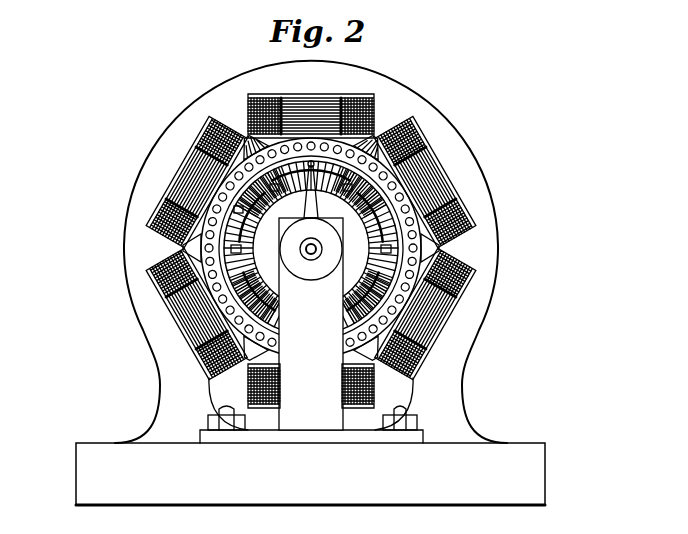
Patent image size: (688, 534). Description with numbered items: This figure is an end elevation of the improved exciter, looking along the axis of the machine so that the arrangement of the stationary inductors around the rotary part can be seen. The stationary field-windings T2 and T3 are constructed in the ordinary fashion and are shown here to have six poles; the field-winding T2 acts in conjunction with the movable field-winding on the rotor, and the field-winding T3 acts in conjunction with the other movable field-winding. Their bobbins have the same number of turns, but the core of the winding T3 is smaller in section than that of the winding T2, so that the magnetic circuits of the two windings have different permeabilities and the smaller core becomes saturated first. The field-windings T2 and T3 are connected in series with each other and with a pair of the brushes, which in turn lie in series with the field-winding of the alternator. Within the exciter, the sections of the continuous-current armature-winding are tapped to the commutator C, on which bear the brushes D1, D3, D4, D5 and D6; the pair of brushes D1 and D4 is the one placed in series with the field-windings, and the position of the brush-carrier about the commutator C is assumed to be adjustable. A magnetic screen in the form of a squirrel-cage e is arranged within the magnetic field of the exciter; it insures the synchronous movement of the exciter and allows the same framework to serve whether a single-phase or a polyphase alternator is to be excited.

The brush D1 is at (443, 252).
The brush D3 is at (185, 340).
The brush D4 is at (215, 224).
The brush D5 is at (262, 152).
The brush D6 is at (423, 138).
The field-winding T2 is at (259, 100).
The field-winding T3 is at (305, 103).
The squirrel-cage e is at (308, 304).
The commutator C is at (311, 240).